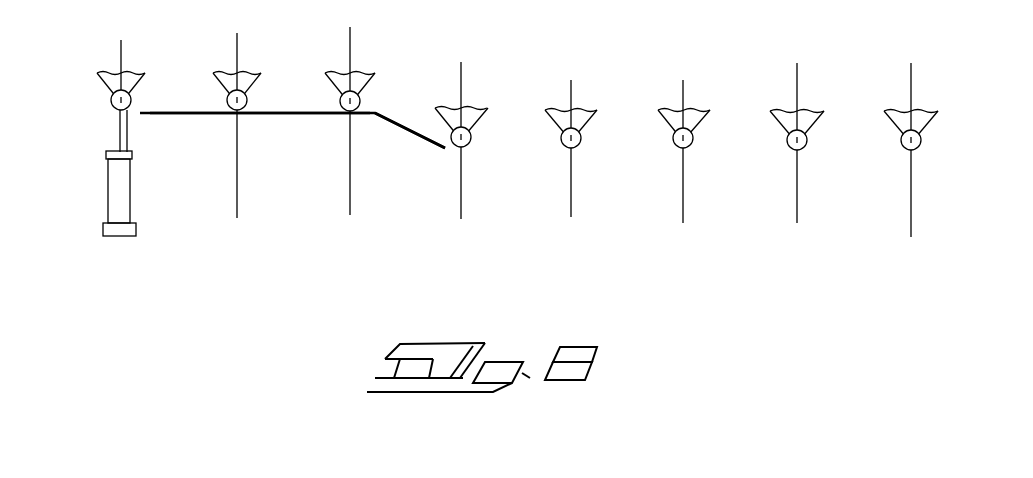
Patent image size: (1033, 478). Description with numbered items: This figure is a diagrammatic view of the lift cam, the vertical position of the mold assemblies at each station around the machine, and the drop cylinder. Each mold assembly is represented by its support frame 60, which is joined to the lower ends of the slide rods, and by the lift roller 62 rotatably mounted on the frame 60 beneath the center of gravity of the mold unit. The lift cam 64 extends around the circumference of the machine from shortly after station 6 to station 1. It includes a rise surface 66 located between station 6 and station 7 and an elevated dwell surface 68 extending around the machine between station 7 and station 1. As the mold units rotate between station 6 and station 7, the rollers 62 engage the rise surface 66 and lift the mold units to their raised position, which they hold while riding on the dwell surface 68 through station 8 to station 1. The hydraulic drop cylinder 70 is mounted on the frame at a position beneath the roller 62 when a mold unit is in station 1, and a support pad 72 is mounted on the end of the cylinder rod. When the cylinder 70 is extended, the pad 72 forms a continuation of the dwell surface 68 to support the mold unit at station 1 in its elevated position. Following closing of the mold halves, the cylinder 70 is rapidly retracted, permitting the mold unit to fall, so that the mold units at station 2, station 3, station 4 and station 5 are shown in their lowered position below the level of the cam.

The support frame 60 is at (663, 115).
The lift roller 62 is at (228, 100).
The lift cam 64 is at (293, 102).
The rise surface 66 is at (403, 127).
The dwell surface 68 is at (187, 115).
The hydraulic drop cylinder 70 is at (115, 197).
The support pad 72 is at (112, 113).
The station 1 is at (95, 163).
The station 2 is at (911, 174).
The station 3 is at (797, 174).
The station 4 is at (677, 183).
The station 5 is at (572, 183).
The station 6 is at (461, 174).
The station 7 is at (350, 156).
The station 8 is at (237, 159).